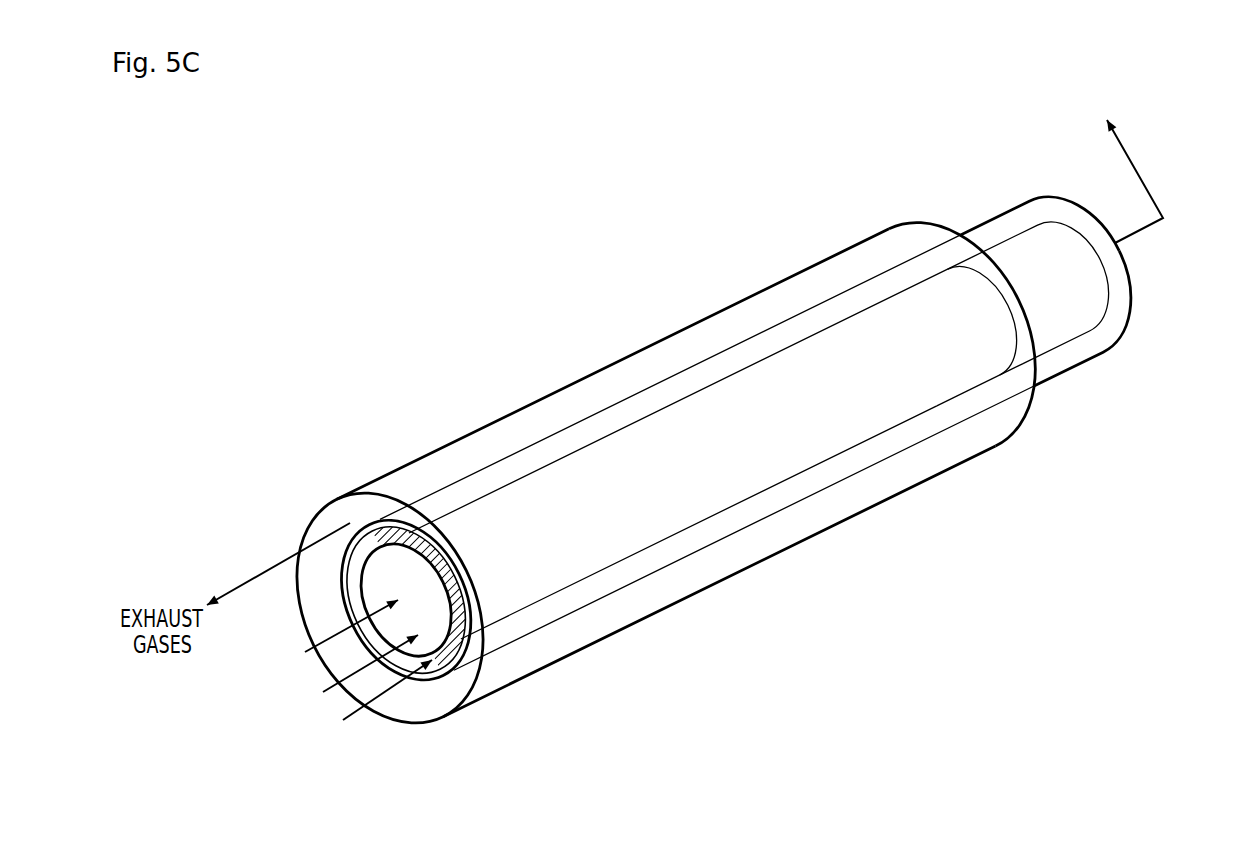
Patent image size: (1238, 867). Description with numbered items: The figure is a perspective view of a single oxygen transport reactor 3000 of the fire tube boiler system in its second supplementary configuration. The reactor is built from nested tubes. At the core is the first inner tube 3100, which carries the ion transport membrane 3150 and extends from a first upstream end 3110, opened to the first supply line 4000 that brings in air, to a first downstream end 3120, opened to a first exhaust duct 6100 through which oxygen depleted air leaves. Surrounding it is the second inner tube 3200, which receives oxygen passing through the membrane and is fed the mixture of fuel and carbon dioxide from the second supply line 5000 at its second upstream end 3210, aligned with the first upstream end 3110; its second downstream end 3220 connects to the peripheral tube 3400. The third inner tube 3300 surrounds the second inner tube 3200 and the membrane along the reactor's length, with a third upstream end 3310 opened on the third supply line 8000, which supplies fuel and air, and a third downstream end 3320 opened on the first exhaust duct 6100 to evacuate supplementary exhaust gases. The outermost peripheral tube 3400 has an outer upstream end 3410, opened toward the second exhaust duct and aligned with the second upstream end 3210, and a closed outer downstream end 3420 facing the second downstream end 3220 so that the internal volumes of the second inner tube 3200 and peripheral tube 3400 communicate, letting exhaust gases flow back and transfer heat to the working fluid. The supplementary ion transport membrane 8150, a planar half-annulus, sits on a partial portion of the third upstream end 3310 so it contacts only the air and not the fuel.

The oxygen transport reactor 3000 is at (530, 212).
The first inner tube 3100 is at (1050, 313).
The first upstream end 3110 is at (449, 598).
The first downstream end 3120 is at (1115, 243).
The ion transport membrane 3150 is at (945, 363).
The second inner tube 3200 is at (888, 440).
The second upstream end 3210 is at (433, 652).
The second downstream end 3220 is at (1020, 362).
The third inner tube 3300 is at (703, 550).
The third upstream end 3310 is at (383, 517).
The third downstream end 3320 is at (1060, 202).
The peripheral tube 3400 is at (818, 522).
The outer upstream end 3410 is at (462, 707).
The outer downstream end 3420 is at (947, 231).
The first supply line 4000 is at (318, 648).
The second supply line 5000 is at (323, 680).
The first exhaust duct 6100 is at (1147, 187).
The third supply line 8000 is at (357, 713).
The supplementary ion transport membrane 8150 is at (433, 545).